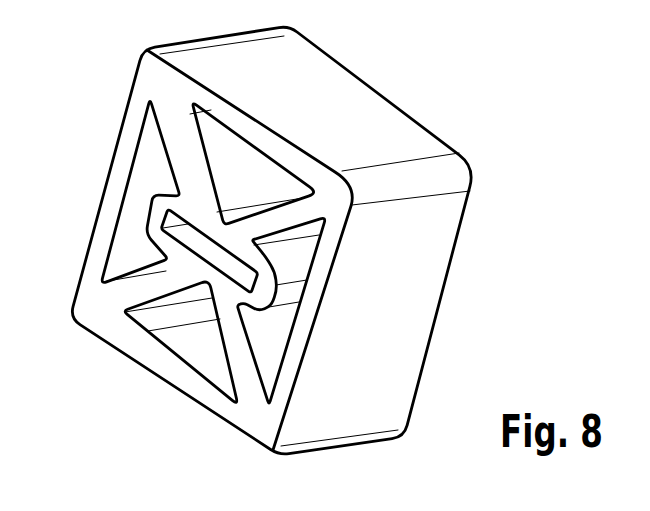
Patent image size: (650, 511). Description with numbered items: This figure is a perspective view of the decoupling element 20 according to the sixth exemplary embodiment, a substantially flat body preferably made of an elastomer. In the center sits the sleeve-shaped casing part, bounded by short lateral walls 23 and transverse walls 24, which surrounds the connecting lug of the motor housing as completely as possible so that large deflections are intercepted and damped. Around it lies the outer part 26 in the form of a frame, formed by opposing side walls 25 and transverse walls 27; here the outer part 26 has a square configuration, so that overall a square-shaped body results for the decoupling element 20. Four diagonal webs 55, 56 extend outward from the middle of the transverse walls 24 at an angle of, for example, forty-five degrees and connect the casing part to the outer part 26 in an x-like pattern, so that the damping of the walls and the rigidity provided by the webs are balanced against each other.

The decoupling element 20 is at (423, 293).
The short lateral walls 23 is at (153, 223).
The transverse walls 24 is at (217, 233).
The side walls 25 is at (113, 188).
The outer part 26 is at (370, 110).
The transverse walls 27 is at (140, 361).
The diagonal web 55 is at (175, 123).
The diagonal web 56 is at (132, 288).